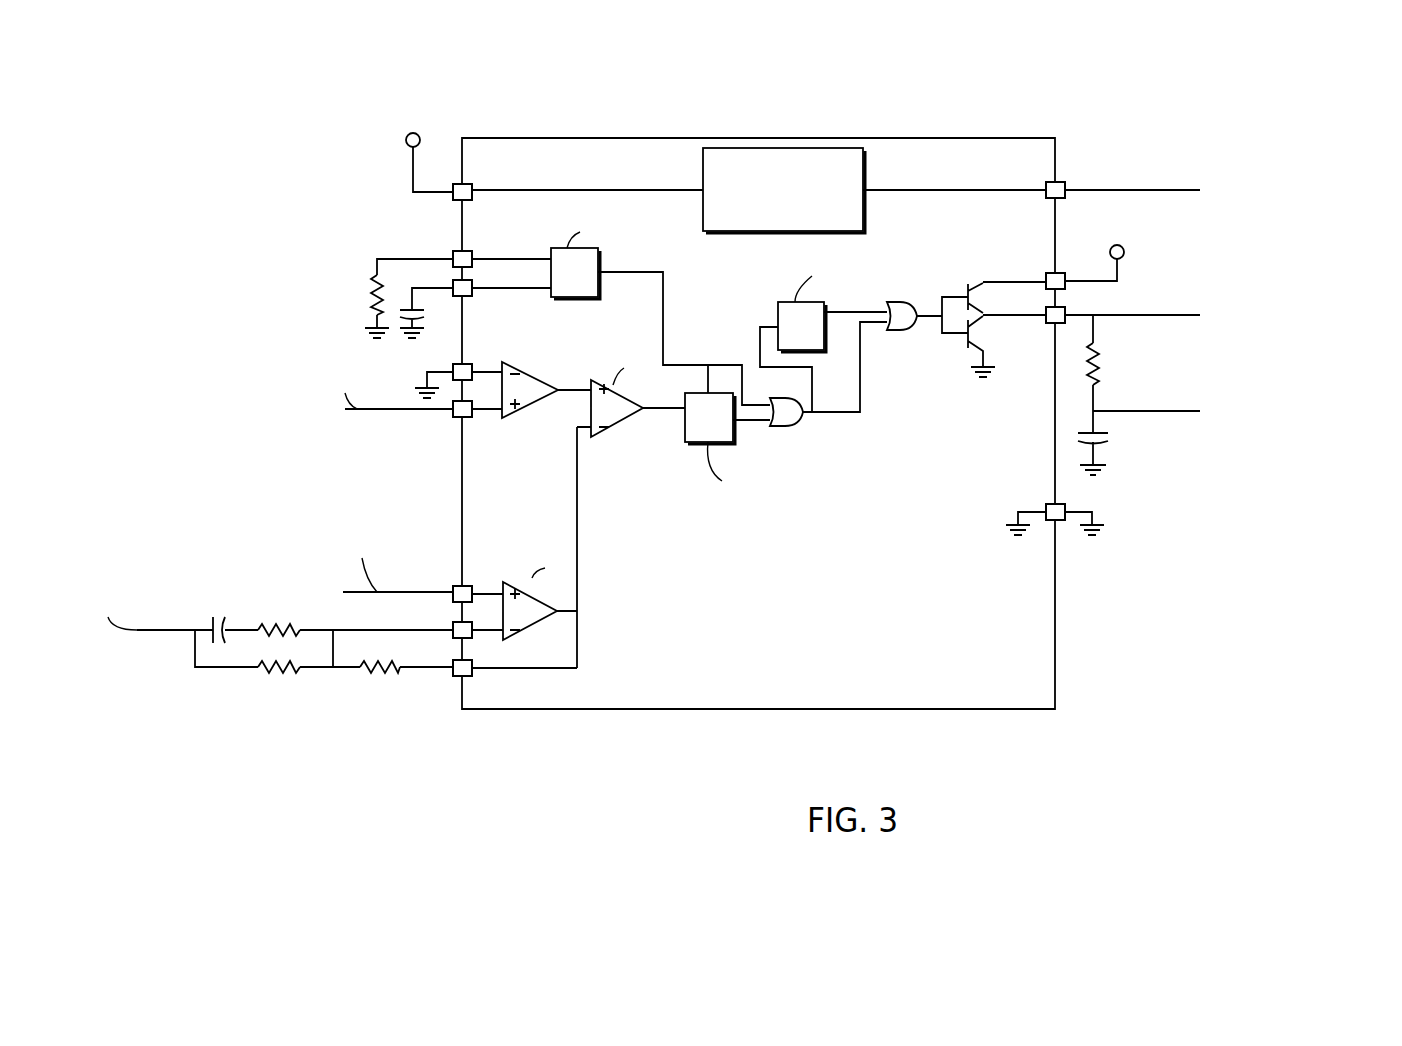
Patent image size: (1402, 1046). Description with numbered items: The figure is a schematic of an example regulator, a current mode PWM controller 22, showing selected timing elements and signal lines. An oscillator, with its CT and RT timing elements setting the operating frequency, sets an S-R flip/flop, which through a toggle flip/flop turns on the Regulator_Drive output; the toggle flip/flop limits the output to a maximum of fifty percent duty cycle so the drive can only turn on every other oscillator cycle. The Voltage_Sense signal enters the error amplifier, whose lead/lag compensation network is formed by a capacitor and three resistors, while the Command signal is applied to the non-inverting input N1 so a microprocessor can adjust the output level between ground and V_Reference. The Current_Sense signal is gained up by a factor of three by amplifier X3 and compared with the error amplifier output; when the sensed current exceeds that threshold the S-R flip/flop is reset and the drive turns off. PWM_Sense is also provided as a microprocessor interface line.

The PWM controller integrated circuit 22 is at (723, 470).
The amplifier X3 is at (530, 364).
The non-inverting input pin N1 is at (407, 583).